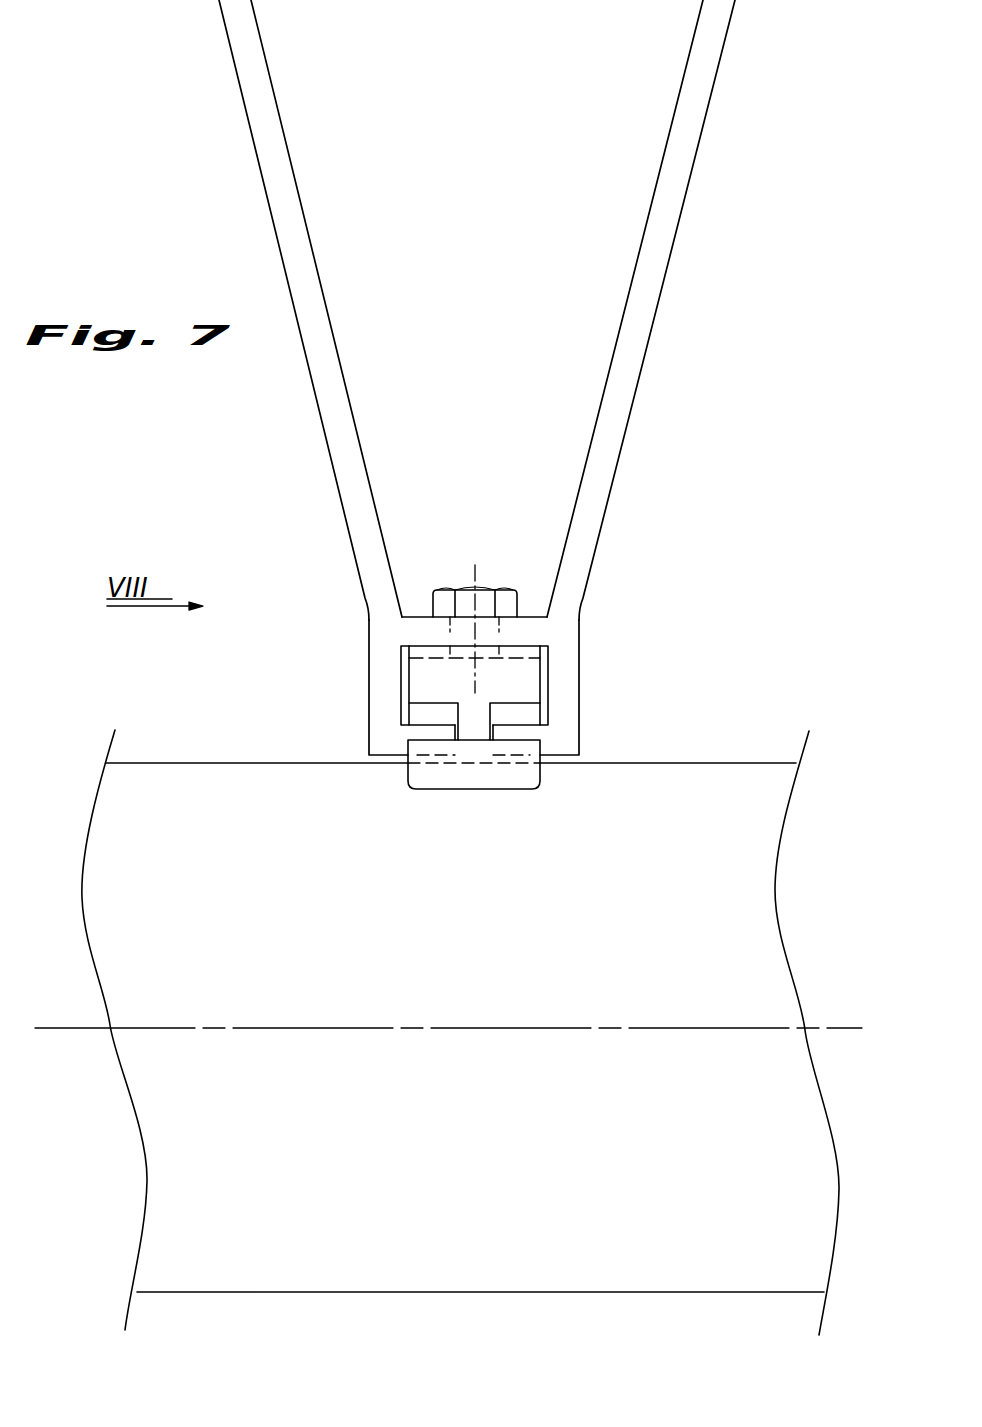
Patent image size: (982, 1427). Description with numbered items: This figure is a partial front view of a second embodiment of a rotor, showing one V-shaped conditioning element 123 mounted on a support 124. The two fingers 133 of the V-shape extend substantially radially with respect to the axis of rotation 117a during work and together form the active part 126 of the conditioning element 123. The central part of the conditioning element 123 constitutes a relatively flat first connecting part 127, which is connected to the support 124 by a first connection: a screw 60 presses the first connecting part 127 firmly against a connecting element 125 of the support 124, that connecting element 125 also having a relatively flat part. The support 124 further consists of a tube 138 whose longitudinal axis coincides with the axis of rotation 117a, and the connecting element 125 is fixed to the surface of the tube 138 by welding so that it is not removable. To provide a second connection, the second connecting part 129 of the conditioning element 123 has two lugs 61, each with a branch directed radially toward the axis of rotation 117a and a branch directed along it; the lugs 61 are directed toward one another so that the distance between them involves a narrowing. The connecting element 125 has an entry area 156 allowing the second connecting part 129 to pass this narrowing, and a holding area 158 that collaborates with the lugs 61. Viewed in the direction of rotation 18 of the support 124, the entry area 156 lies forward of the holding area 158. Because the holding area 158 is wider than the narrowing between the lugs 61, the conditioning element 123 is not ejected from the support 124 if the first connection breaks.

The fingers 133 is at (290, 153).
The active part 126 is at (668, 330).
The conditioning element 123 is at (666, 561).
The second connecting part 129 is at (594, 669).
The first connecting part 127 is at (417, 602).
The holding area 158 is at (410, 673).
The entry area 156 is at (458, 717).
The connecting element 125 is at (513, 803).
The screw 60 is at (508, 587).
The lugs 61 is at (369, 743).
The support 124 is at (797, 688).
The tube 138 is at (187, 763).
The axis of rotation 117a is at (190, 1028).
The direction of rotation 18 is at (847, 960).